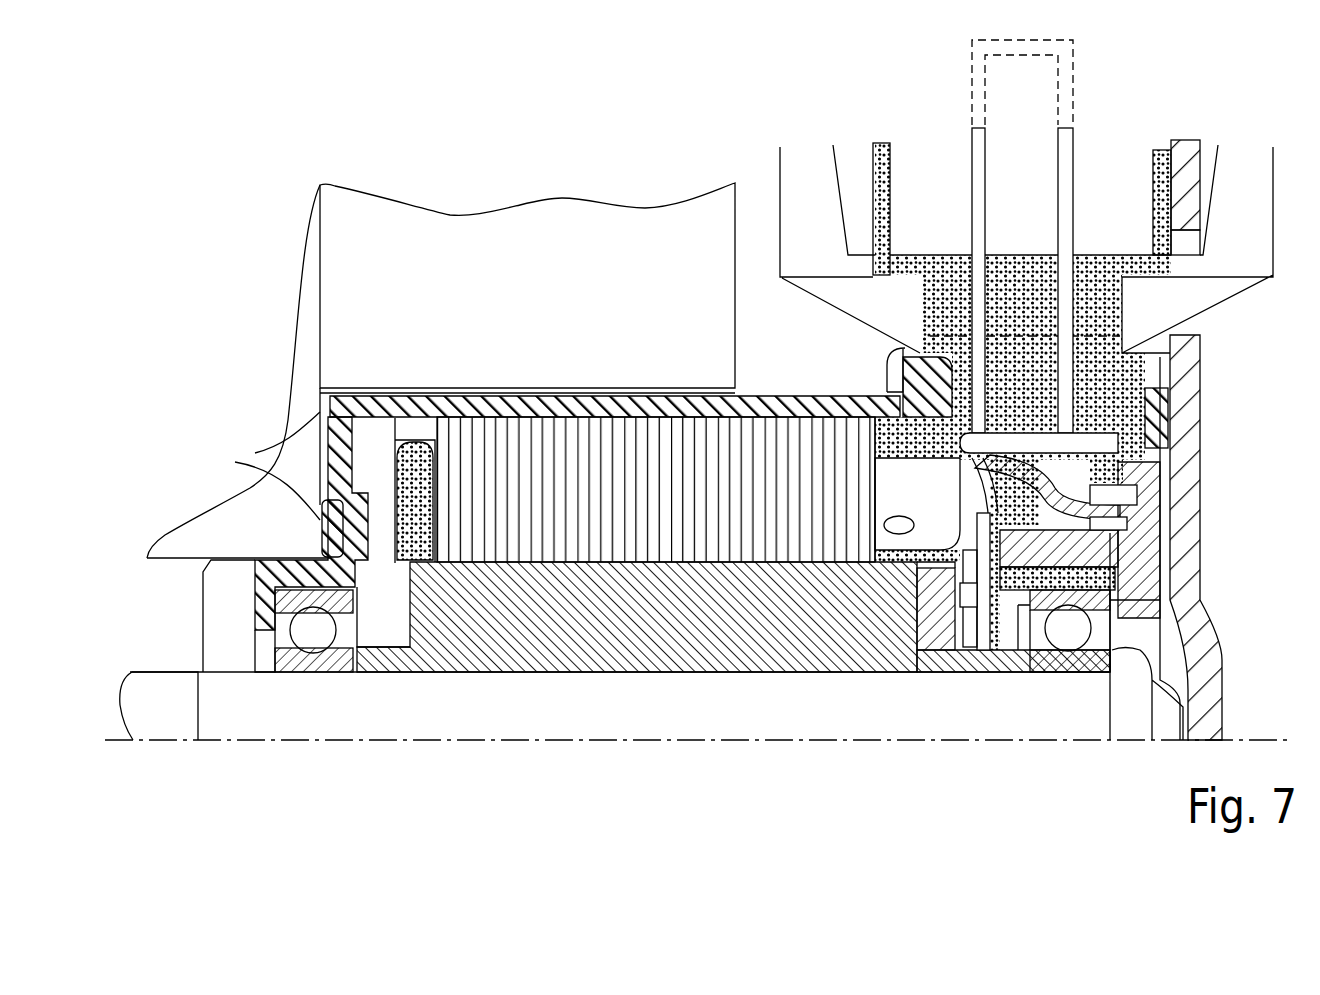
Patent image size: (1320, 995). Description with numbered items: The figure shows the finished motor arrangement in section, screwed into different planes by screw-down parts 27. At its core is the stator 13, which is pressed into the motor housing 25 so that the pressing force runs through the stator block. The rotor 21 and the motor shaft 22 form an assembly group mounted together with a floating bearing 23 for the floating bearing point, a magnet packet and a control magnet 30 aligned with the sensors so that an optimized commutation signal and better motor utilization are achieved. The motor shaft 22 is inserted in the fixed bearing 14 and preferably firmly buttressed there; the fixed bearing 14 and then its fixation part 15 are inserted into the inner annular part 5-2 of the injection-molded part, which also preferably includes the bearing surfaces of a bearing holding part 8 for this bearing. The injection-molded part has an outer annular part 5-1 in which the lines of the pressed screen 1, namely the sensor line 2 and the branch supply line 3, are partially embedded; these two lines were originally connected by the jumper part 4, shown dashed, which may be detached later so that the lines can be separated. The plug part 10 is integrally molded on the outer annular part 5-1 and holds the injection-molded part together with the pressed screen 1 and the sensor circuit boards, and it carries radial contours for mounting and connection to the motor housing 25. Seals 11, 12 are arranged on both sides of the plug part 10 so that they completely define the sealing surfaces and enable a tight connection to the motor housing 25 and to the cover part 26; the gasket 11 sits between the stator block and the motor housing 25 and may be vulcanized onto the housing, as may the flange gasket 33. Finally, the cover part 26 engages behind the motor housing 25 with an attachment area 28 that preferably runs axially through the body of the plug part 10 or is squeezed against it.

The pressed screen 1 is at (990, 530).
The sensor line 2 is at (982, 163).
The branch supply line 3 is at (1065, 158).
The jumper part 4 is at (1075, 70).
The outer annular part 5-1 is at (1158, 395).
The inner annular part 5-2 is at (1113, 555).
The bearing holding part 8 is at (1046, 668).
The plug part 10 is at (1160, 305).
The seal 11 is at (900, 384).
The seal 12 is at (1137, 437).
The stator 13 is at (553, 445).
The fixed bearing 14 is at (1112, 615).
The fixation part 15 is at (1136, 573).
The rotor 21 is at (508, 620).
The motor shaft 22 is at (176, 705).
The floating bearing 23 is at (284, 570).
The motor housing 25 is at (491, 396).
The cover part 26 is at (1187, 160).
The screw-down parts 27 is at (275, 366).
The attachment area 28 is at (918, 352).
The control magnet 30 is at (904, 660).
The flange gasket 33 is at (280, 500).